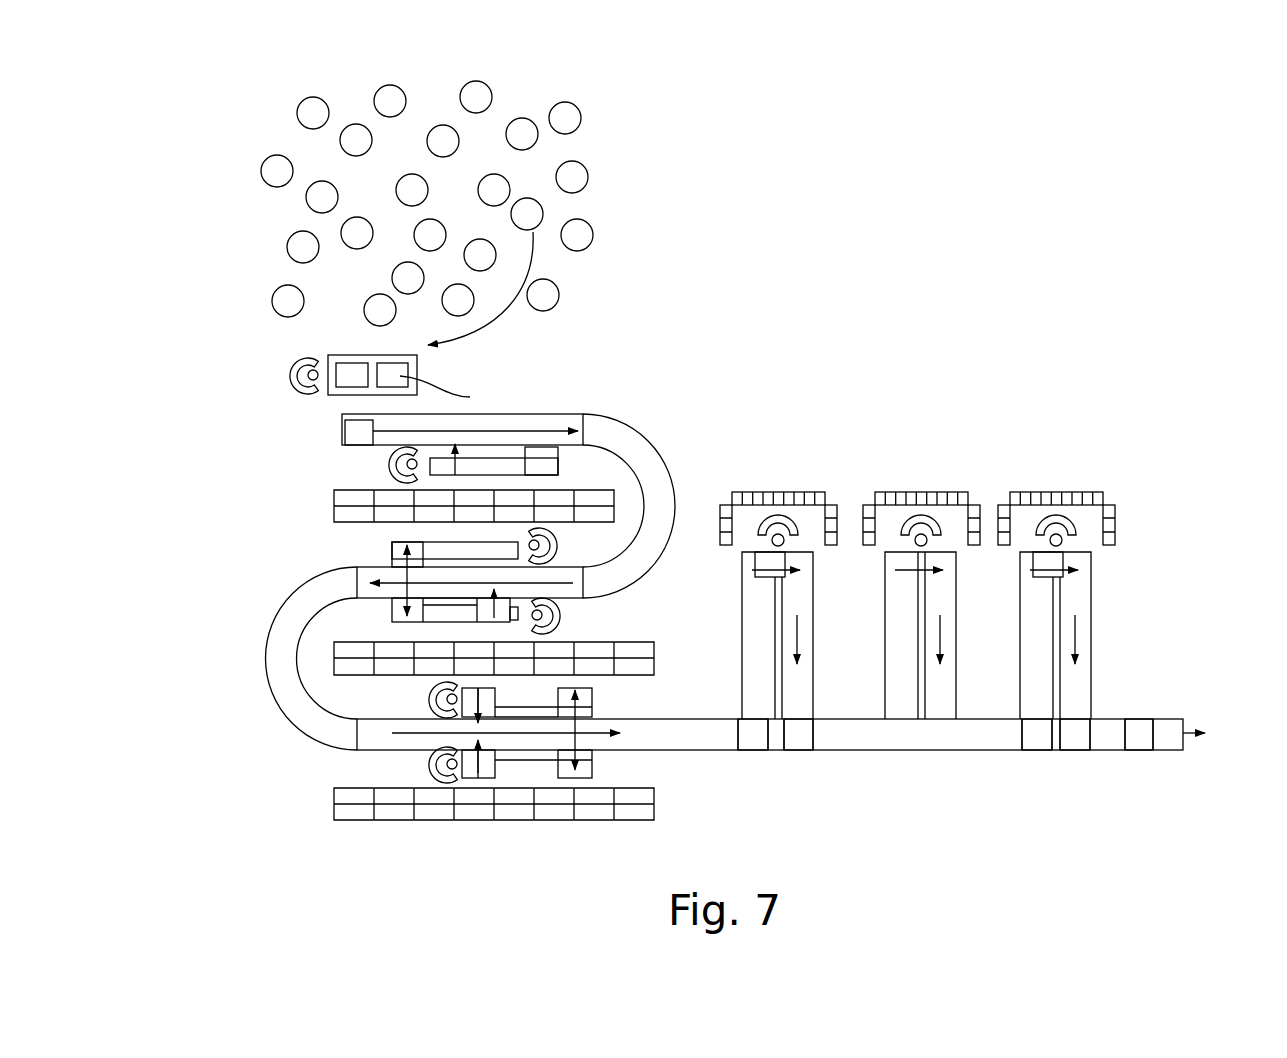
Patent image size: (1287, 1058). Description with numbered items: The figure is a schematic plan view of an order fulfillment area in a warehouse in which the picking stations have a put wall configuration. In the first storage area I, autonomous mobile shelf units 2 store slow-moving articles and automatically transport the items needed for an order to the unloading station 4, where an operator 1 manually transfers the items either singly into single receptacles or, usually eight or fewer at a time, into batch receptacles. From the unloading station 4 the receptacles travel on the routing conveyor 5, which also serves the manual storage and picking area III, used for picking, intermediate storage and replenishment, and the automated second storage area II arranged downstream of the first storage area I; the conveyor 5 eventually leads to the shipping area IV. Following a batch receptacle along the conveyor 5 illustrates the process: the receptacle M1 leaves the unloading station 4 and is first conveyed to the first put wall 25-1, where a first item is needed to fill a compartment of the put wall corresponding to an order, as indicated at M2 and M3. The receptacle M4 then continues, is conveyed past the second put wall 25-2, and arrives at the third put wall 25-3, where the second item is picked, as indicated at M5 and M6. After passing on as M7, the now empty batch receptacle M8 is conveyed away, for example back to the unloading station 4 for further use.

The first storage area I is at (242, 158).
The autonomous mobile shelf units 2 is at (476, 92).
The operator 1 is at (275, 366).
The unloading station 4 is at (430, 371).
The manual storage and picking area III is at (276, 538).
The routing conveyor 5 is at (647, 462).
The batch receptacle M1 is at (348, 432).
The batch receptacle M2 is at (758, 748).
The batch receptacle M3 is at (783, 562).
The batch receptacle M4 is at (800, 748).
The batch receptacle M5 is at (1037, 748).
The batch receptacle M6 is at (1062, 563).
The batch receptacle M7 is at (1073, 748).
The batch receptacle M8 is at (1140, 727).
The automated second storage area II is at (983, 480).
The first put wall 25-1 is at (768, 473).
The second put wall 25-2 is at (910, 473).
The third put wall 25-3 is at (1050, 473).
The shipping area IV is at (1207, 732).